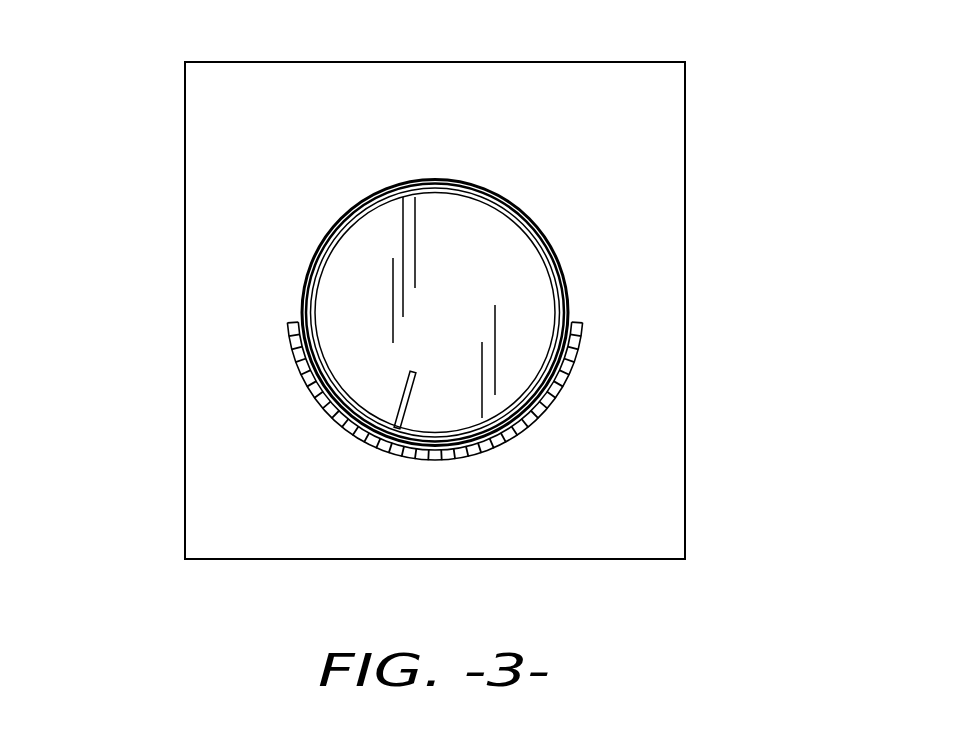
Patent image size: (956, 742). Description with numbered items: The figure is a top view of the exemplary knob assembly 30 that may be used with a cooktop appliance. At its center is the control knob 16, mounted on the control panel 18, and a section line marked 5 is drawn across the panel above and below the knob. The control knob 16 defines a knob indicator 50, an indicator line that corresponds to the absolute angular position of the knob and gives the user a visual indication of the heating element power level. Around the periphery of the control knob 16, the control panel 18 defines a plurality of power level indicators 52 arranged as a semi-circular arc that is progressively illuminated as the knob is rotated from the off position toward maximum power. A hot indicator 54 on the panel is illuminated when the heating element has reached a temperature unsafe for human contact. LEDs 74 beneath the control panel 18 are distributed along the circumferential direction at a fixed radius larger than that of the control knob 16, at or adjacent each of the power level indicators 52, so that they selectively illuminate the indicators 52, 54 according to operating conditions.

The section line 5- 5 is at (455, 31).
The control knob 16 is at (462, 222).
The control panel 18 is at (602, 80).
The knob assembly 30 is at (148, 88).
The knob indicator 50 is at (413, 397).
The power level indicators 52 is at (323, 412).
The hot indicator 54 is at (292, 197).
The LEDs 74 is at (567, 375).